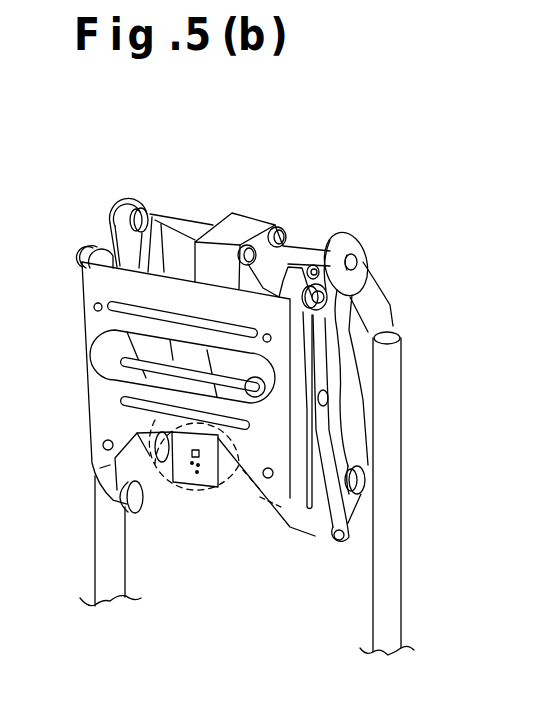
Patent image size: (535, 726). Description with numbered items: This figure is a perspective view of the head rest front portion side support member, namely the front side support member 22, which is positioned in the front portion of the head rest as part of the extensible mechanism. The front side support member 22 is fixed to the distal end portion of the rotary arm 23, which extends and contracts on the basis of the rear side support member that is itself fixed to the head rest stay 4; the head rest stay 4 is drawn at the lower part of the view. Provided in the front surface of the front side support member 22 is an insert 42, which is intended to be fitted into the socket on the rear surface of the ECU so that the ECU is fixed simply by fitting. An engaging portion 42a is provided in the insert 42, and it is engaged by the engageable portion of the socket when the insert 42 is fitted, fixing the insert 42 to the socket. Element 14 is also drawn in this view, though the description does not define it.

The head rest stay 4 is at (105, 568).
The slide block 14 is at (242, 226).
The front side support member 22 is at (85, 297).
The rotary arm 23 is at (327, 522).
The insert 42 is at (203, 487).
The engaging portion 42a is at (192, 465).